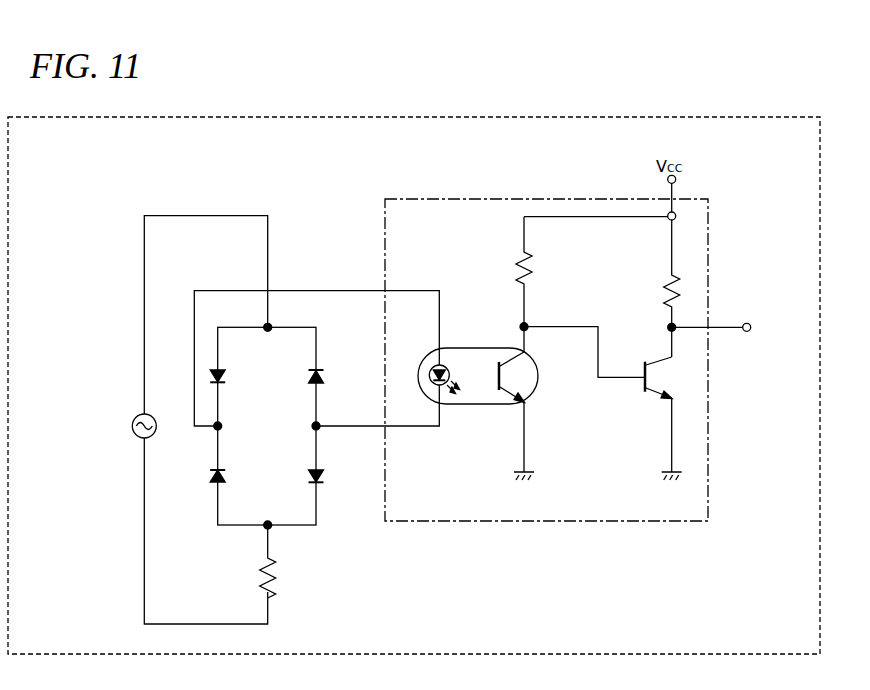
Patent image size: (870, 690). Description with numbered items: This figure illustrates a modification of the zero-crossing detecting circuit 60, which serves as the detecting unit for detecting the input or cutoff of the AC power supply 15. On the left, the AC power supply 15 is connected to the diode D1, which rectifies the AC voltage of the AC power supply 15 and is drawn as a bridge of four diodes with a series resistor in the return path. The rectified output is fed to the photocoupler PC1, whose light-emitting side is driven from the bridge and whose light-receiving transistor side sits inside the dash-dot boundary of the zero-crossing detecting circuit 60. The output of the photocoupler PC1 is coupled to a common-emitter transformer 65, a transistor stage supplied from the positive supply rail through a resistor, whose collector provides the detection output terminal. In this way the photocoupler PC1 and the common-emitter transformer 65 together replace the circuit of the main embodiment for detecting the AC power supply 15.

The AC power supply 15 is at (140, 439).
The zero-crossing detecting circuit 60 is at (708, 397).
The common-emitter transformer 65 is at (660, 356).
The photodiode D1 is at (298, 320).
The photocoupler PC1 is at (478, 388).